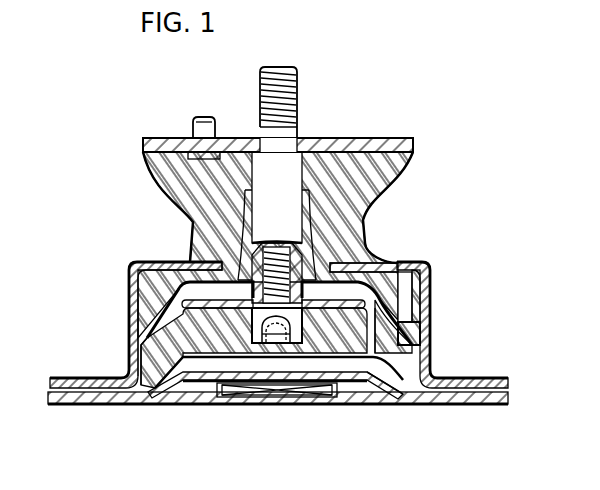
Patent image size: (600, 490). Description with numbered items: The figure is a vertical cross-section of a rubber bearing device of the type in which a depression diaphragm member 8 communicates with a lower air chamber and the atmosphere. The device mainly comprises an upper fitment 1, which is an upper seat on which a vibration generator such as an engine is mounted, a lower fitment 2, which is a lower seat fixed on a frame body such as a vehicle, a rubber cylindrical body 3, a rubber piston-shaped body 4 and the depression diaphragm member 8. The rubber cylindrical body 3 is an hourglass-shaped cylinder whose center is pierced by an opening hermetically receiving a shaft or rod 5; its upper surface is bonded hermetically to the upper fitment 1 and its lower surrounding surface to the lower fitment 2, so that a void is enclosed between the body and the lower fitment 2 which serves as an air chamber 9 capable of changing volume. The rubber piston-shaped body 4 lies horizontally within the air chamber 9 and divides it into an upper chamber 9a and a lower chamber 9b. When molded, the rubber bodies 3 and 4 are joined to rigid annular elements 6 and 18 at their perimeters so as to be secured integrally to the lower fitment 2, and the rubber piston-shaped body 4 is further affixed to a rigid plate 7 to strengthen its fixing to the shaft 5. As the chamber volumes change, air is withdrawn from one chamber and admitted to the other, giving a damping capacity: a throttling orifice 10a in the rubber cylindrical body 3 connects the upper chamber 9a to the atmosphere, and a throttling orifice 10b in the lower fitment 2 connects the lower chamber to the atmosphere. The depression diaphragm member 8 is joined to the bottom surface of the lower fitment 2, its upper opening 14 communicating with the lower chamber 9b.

The upper fitment 1 is at (345, 140).
The lower fitment 2 is at (462, 404).
The rubber cylindrical body 3 is at (195, 205).
The rubber piston-shaped body 4 is at (395, 345).
The shaft or rod 5 is at (290, 178).
The rigid annular element 6 is at (160, 263).
The rigid plate 7 is at (390, 265).
The depression diaphragm member 8 is at (270, 388).
The air chamber 9 is at (175, 288).
The upper chamber 9a is at (150, 308).
The lower chamber 9b is at (198, 367).
The orifice 10a is at (428, 278).
The orifice 10b is at (367, 377).
The upper opening 14 is at (222, 384).
The rigid annular element 18 is at (128, 357).